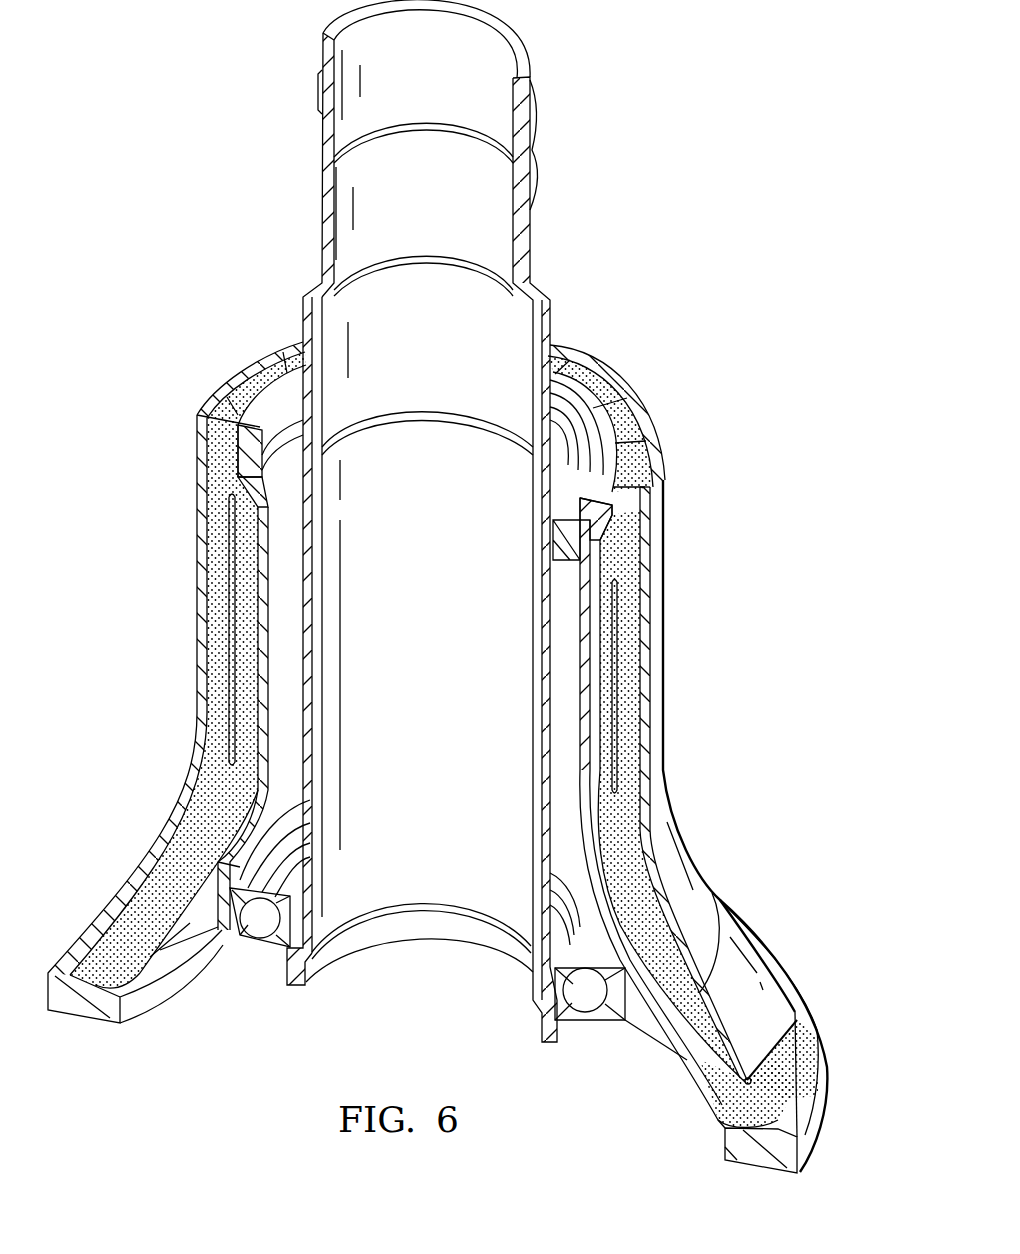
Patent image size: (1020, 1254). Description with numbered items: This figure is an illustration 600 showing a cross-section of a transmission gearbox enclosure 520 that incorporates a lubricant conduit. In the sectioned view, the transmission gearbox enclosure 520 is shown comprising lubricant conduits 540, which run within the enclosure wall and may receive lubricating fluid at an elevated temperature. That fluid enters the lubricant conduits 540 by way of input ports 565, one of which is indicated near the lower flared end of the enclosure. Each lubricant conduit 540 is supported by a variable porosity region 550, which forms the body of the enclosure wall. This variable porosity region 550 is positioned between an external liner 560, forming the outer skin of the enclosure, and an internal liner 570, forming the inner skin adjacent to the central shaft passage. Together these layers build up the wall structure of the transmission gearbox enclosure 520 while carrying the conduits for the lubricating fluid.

The illustration 600 is at (680, 204).
The transmission gearbox enclosure 520 is at (166, 435).
The lubricant conduit 540 is at (240, 553).
The variable porosity region 550 is at (640, 560).
The external liner 560 is at (612, 383).
The input port 565 is at (748, 1076).
The internal liner 570 is at (548, 398).